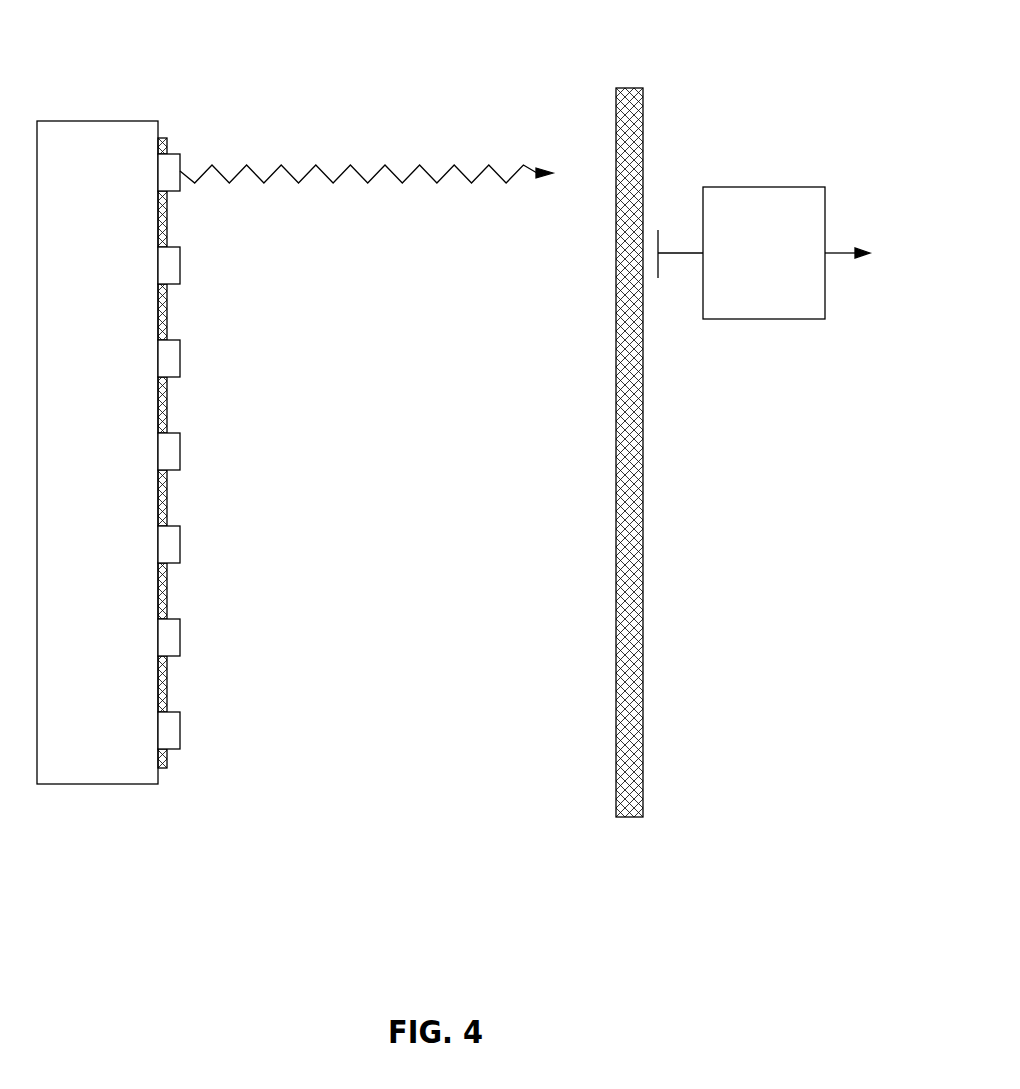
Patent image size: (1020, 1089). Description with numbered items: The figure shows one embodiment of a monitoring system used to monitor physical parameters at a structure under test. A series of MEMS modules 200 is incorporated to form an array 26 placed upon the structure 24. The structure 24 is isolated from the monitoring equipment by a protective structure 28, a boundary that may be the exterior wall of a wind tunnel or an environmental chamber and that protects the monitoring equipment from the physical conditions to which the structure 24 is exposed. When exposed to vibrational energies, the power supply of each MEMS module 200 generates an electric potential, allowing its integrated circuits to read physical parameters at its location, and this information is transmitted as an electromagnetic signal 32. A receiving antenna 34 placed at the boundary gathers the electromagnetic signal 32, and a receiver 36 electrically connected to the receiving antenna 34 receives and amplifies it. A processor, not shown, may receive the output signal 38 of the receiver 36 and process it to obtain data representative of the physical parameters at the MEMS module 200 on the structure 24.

The structure 24 is at (110, 463).
The array 26 is at (221, 122).
The MEMS module 200 is at (165, 191).
The electromagnetic signal 32 is at (498, 128).
The protective structure 28 is at (643, 817).
The receiving antenna 34 is at (672, 255).
The receiver 36 is at (764, 253).
The output signal 38 is at (872, 231).